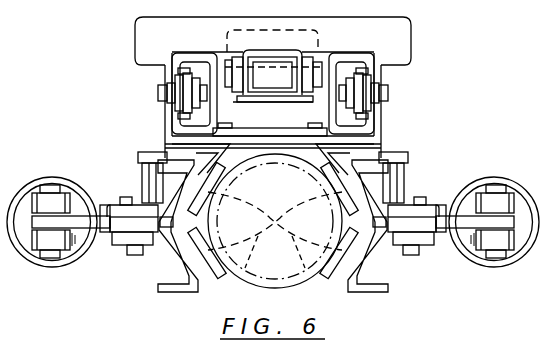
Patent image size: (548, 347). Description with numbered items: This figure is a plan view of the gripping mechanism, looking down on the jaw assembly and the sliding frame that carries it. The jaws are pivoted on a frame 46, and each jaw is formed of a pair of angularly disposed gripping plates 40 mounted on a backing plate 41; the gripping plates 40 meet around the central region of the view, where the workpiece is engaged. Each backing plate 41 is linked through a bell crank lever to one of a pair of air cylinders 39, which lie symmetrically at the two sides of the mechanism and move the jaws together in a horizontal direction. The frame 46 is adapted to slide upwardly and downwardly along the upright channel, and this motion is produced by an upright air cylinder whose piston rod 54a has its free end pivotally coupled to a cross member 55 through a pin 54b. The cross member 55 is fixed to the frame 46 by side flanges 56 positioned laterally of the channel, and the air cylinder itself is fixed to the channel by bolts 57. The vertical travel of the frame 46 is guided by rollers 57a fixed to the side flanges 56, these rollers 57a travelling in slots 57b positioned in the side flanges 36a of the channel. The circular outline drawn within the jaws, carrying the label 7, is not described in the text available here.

The cross member 55 is at (411, 42).
The side flanges 56 is at (381, 115).
The side flanges of channel 36a is at (172, 52).
The piston rod 54a is at (312, 46).
The pin 54b is at (220, 60).
The bolts 57 is at (280, 119).
The rollers 57a is at (160, 90).
The slots 57b is at (183, 123).
The frame 46 is at (408, 164).
The air cylinders 39 is at (97, 177).
The gripping plates 40 is at (273, 220).
The backing plate 41 is at (379, 282).
The circular track 7 is at (306, 288).